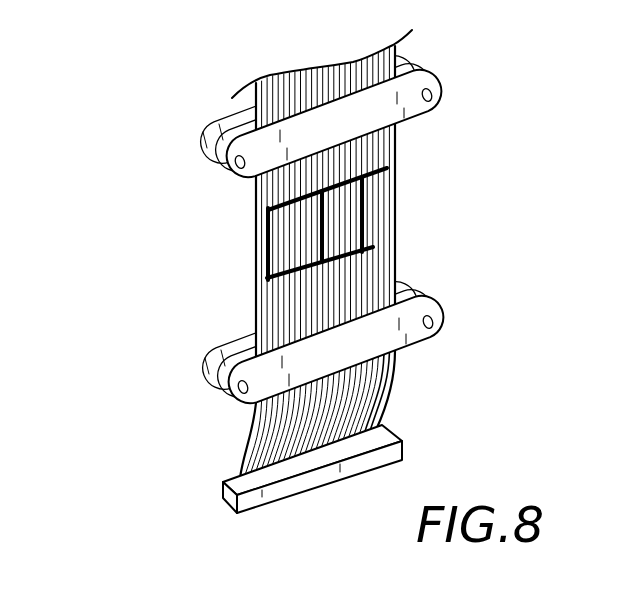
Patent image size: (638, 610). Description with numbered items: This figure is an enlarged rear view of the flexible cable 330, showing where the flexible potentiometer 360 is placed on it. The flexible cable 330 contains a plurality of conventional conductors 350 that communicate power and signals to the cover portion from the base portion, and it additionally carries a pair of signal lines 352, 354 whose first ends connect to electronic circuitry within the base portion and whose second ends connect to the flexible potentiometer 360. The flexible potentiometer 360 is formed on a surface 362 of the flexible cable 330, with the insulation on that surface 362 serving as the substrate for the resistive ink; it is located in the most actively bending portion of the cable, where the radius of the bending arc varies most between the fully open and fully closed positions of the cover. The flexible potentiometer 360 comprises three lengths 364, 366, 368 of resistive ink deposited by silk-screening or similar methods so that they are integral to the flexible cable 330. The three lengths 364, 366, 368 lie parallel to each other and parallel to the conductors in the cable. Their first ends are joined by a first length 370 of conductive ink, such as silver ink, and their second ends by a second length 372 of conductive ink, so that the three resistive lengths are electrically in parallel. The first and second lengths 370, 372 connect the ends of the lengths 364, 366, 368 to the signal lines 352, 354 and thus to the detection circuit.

The flexible cable 330 is at (128, 271).
The conductors 350 is at (352, 378).
The signal line 352 is at (380, 408).
The signal line 354 is at (380, 400).
The flexible potentiometer 360 is at (435, 188).
The surface 362 is at (330, 287).
The length of resistive ink 364 is at (274, 247).
The length of resistive ink 366 is at (288, 267).
The length of resistive ink 368 is at (363, 241).
The first length of conductive ink 370 is at (340, 180).
The second length of conductive ink 372 is at (292, 284).